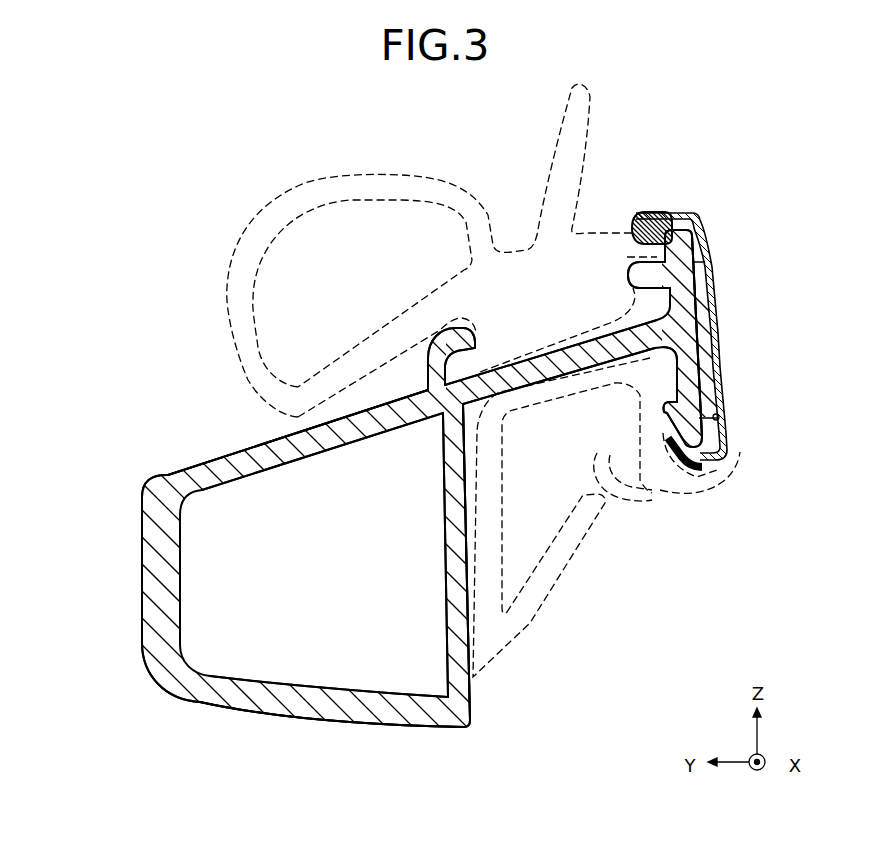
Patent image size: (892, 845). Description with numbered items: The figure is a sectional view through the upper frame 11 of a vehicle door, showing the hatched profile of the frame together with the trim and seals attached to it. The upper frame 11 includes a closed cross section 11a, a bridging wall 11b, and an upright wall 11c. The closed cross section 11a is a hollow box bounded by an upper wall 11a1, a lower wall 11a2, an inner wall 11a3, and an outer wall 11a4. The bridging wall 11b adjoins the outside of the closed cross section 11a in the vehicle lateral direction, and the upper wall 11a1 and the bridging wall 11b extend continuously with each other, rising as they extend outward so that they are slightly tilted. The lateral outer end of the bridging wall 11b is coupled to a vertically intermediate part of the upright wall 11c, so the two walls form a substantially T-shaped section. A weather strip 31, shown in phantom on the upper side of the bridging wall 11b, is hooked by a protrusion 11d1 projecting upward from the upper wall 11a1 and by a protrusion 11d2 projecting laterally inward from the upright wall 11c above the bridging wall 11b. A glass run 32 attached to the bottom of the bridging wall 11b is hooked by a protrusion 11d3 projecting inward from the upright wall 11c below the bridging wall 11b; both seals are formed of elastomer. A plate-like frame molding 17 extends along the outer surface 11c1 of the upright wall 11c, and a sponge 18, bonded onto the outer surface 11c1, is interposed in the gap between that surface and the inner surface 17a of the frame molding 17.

The upper frame 11 is at (238, 710).
The closed cross section 11a is at (157, 480).
The upper wall 11a1 is at (223, 463).
The lower wall 11a2 is at (302, 705).
The inner wall 11a3 is at (150, 583).
The outer wall 11a4 is at (453, 558).
The bridging wall 11b is at (543, 367).
The upright wall 11c is at (680, 377).
The outer surface 11c1 is at (713, 302).
The protrusion 11d1 is at (464, 338).
The protrusion 11d2 is at (631, 280).
The protrusion 11d3 is at (663, 412).
The frame molding 17 is at (702, 211).
The inner surface 17a is at (718, 418).
The sponge 18 is at (710, 340).
The weather strip 31 is at (300, 178).
The glass run 32 is at (532, 623).